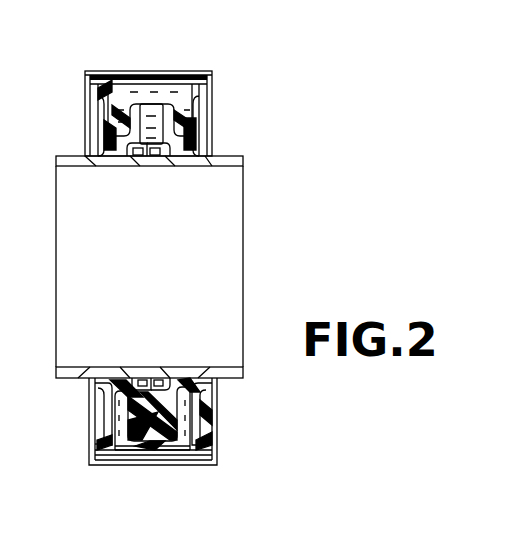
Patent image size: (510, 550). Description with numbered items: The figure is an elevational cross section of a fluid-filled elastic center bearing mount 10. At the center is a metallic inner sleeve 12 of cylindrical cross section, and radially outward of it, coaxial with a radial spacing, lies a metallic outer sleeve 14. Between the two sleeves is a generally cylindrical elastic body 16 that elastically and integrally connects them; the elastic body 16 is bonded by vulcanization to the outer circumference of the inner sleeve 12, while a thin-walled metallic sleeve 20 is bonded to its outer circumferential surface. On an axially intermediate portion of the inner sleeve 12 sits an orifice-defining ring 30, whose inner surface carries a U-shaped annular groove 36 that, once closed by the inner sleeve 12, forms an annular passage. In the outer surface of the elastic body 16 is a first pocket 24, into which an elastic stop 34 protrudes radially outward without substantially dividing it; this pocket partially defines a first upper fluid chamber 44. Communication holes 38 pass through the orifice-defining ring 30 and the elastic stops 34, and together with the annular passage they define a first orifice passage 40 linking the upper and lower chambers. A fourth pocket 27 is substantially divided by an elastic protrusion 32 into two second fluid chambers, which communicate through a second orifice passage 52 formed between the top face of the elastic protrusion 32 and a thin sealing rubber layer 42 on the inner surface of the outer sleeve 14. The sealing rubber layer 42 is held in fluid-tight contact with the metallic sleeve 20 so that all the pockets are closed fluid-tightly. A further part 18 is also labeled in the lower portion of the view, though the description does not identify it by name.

The fluid-filled elastic center bearing mount 10 is at (283, 50).
The inner sleeve 12 is at (243, 159).
The outer sleeve 14 is at (129, 80).
The elastic body 16 is at (104, 104).
The lower seal element 18 is at (93, 368).
The metallic sleeve 20 is at (97, 455).
The first pocket 24 is at (187, 108).
The fourth pocket 27 is at (190, 414).
The orifice-defining ring 30 is at (143, 380).
The elastic protrusions 32 is at (135, 442).
The elastic stops 34 is at (138, 124).
The annular groove 36 is at (160, 380).
The communication holes 38 is at (153, 166).
The first orifice passage 40 is at (138, 166).
The sealing rubber layer 42 is at (151, 80).
The first upper fluid chamber 44 is at (118, 84).
The second orifice passage 52 is at (145, 448).